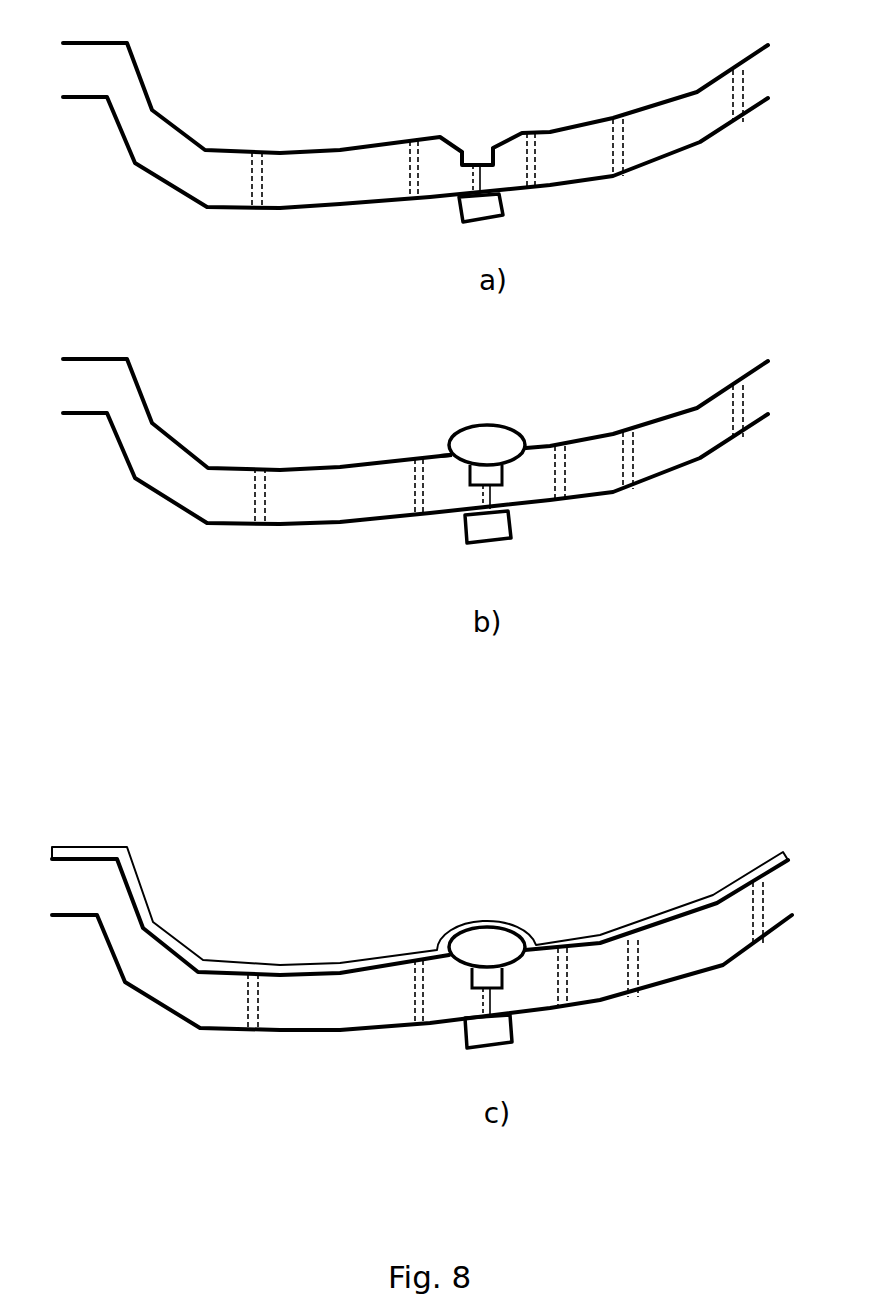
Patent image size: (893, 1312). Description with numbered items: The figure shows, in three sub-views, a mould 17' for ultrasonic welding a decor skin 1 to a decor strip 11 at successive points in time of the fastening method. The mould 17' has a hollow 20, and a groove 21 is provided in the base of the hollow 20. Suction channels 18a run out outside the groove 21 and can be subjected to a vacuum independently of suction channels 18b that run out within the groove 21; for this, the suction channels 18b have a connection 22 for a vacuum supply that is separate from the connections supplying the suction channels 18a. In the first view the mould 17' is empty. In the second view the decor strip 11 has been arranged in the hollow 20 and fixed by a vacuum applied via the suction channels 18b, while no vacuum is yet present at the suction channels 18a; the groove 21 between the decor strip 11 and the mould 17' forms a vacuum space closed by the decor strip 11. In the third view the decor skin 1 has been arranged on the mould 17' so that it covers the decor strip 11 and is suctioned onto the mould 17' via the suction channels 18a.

The mould 17' is at (404, 536).
The suction channels 18a is at (252, 207).
The suction channels 18b is at (483, 180).
The hollow 20 is at (457, 145).
The groove 21 is at (475, 153).
The connection 22 is at (485, 205).
The decor strip 11 is at (485, 433).
The decor skin 1 is at (328, 965).